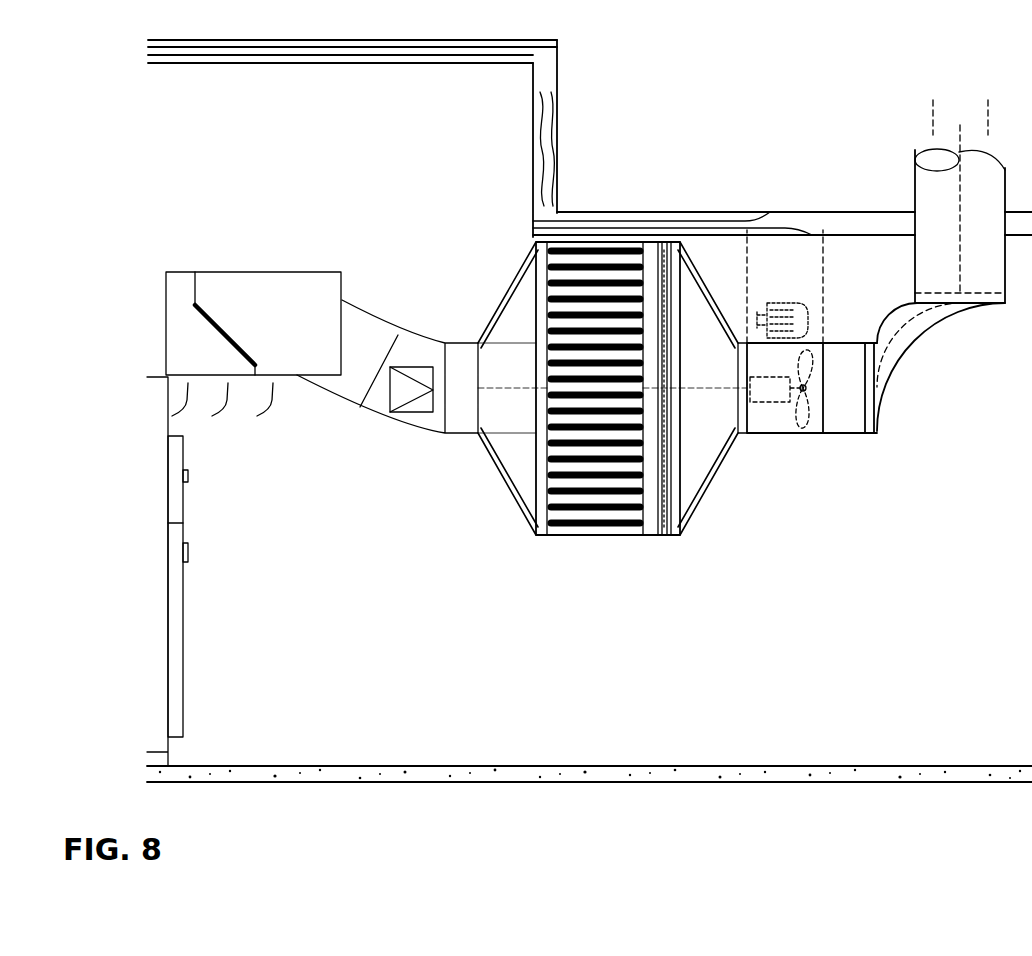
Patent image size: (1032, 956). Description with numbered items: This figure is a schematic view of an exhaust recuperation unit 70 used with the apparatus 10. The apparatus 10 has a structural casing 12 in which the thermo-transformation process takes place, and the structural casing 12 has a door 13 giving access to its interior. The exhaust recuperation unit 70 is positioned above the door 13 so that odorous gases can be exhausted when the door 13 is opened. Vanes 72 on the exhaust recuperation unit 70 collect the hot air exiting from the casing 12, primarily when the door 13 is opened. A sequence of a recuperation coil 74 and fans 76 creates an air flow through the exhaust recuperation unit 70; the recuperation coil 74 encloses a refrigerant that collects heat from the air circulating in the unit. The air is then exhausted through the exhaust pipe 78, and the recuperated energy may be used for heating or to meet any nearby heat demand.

The apparatus 10 is at (214, 491).
The structural casing 12 is at (183, 523).
The door 13 is at (183, 630).
The exhaust recuperation unit 70 is at (348, 232).
The vanes 72 is at (235, 338).
The recuperation coil 74 is at (592, 530).
The fans 76 is at (807, 428).
The exhaust pipe 78 is at (915, 192).